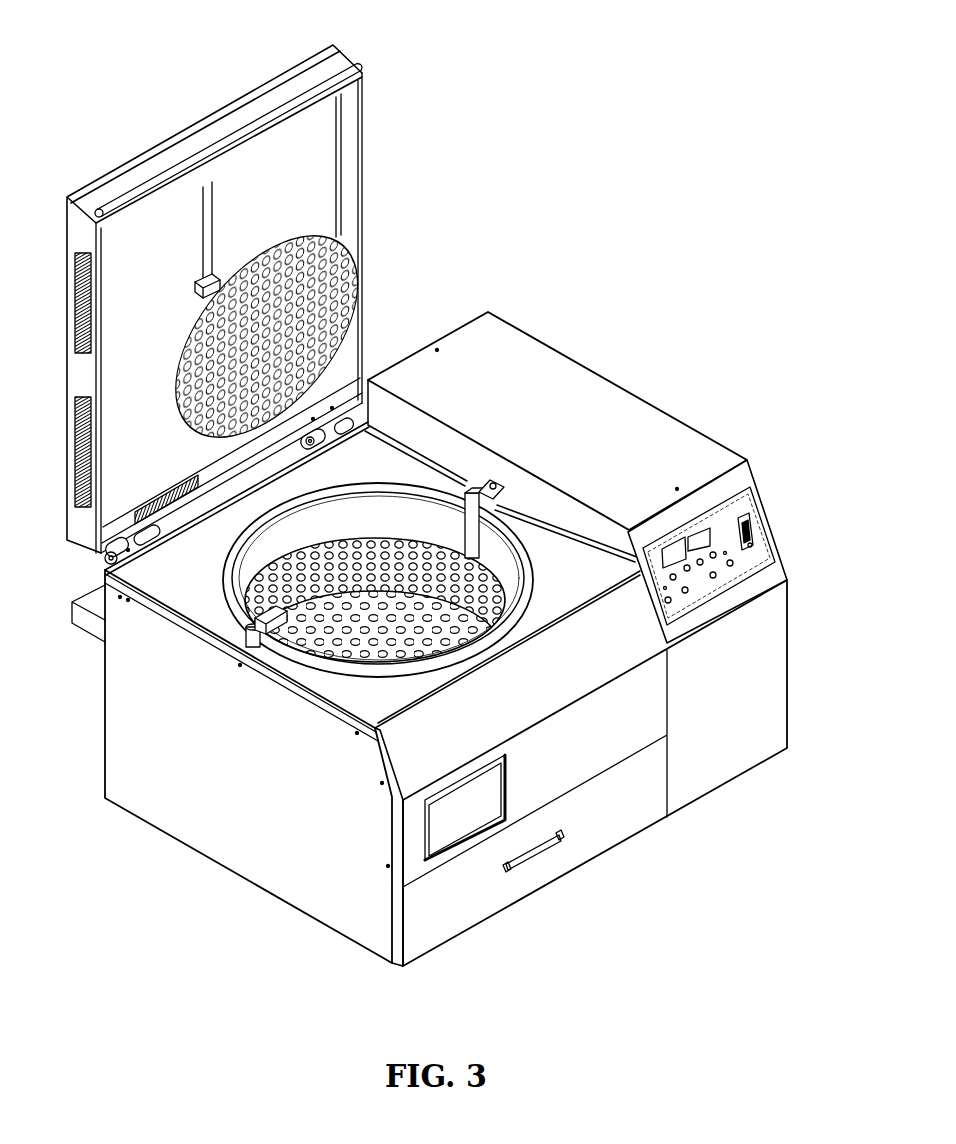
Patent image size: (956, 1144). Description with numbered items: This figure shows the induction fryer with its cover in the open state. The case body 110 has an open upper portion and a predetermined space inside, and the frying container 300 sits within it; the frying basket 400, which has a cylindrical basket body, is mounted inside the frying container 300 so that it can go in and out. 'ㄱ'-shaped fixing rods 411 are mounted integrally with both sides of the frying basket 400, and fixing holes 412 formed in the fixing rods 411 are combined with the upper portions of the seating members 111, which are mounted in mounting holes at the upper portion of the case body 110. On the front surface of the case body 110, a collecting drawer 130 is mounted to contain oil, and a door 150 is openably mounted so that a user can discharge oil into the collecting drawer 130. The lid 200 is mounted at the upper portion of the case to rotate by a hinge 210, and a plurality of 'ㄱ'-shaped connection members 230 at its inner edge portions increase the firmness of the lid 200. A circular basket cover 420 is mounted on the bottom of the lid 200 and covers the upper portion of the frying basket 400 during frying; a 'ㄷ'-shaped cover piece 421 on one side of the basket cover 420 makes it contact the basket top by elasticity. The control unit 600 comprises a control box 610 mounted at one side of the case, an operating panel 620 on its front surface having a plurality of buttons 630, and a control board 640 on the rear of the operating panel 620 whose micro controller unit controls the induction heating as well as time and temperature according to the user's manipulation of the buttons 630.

The case body 110 is at (268, 874).
The seating members 111 is at (248, 640).
The collecting drawer 130 is at (568, 848).
The door 150 is at (447, 826).
The lid 200 is at (294, 74).
The hinge 210 is at (103, 577).
The connection members 230 is at (357, 58).
The frying container 300 is at (237, 555).
The frying basket 400 is at (494, 566).
The fixing rods 411 is at (477, 486).
The fixing holes 412 is at (496, 483).
The basket cover 420 is at (358, 262).
The cover piece 421 is at (215, 272).
The control unit 600 is at (497, 305).
The control box 610 is at (566, 378).
The operating panel 620 is at (753, 562).
The buttons 630 is at (713, 577).
The control board 640 is at (740, 513).